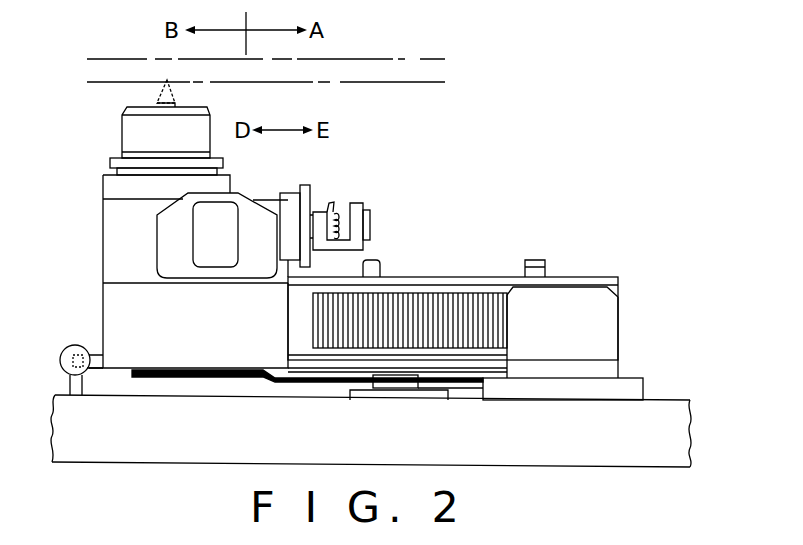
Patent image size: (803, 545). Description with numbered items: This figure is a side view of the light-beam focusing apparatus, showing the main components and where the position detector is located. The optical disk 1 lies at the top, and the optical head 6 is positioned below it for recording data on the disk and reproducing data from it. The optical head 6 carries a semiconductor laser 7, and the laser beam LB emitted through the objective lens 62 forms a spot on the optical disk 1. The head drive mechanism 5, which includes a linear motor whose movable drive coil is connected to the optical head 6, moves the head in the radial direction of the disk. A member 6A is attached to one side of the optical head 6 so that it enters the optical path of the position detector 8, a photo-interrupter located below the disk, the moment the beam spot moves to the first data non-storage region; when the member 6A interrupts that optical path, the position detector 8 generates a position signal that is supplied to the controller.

The optical disk 1 is at (405, 60).
The laser beam LB is at (176, 95).
The objective lens 62 is at (153, 104).
The optical head 6 is at (103, 229).
The member 6A is at (75, 346).
The semiconductor laser 7 is at (344, 213).
The position detector 8 is at (61, 369).
The head drive mechanism 5 is at (556, 449).